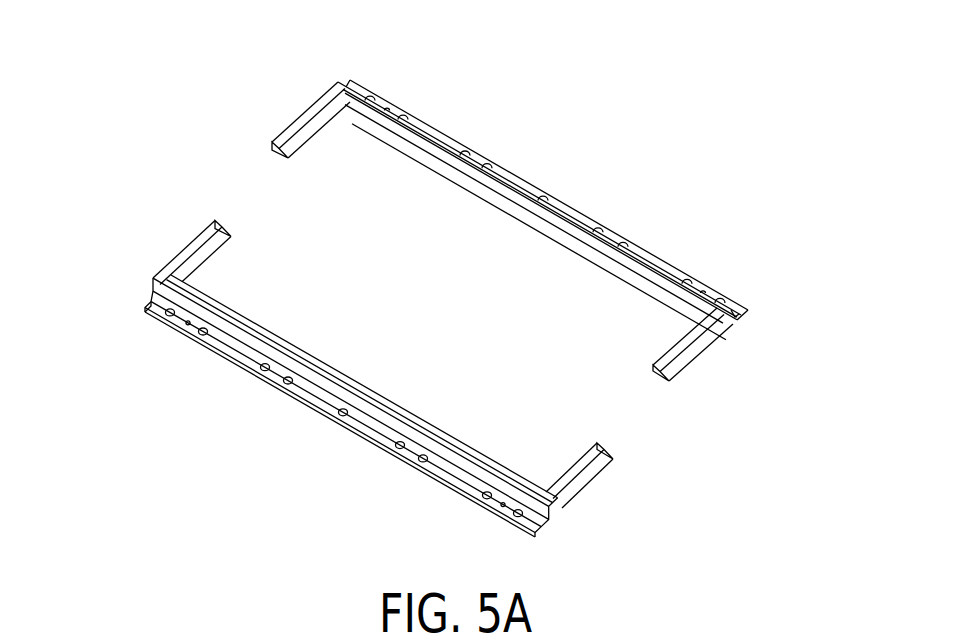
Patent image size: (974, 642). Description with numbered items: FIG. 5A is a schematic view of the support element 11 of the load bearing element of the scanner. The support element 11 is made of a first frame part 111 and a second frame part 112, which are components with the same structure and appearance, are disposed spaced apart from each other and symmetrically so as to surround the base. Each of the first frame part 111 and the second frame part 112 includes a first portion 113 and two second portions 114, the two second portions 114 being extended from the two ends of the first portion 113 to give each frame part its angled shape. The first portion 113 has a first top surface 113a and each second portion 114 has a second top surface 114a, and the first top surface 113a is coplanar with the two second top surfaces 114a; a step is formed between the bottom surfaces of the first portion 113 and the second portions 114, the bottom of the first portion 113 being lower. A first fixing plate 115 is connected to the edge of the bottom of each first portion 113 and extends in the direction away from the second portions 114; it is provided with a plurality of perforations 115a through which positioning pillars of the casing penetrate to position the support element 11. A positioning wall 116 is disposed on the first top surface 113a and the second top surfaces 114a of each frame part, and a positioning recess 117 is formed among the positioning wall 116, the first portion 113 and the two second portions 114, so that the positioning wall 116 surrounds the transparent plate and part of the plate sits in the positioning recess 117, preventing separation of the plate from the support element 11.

The support element 11 is at (826, 110).
The first frame part 111 is at (346, 79).
The second frame part 112 is at (165, 252).
The first portion 113 is at (570, 243).
The first top surface 113a is at (633, 268).
The second portion 114 is at (298, 143).
The second top surface 114a is at (322, 114).
The first fixing plate 115 is at (440, 140).
The perforations 115a is at (327, 413).
The positioning wall 116 is at (366, 100).
The positioning recess 117 is at (374, 119).